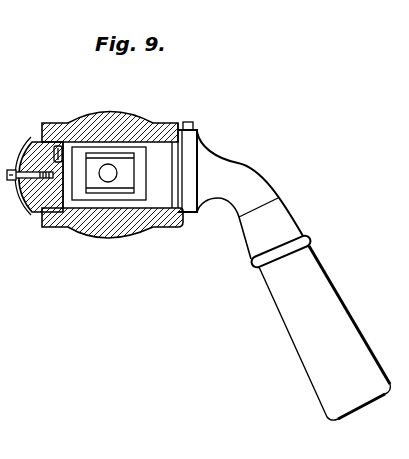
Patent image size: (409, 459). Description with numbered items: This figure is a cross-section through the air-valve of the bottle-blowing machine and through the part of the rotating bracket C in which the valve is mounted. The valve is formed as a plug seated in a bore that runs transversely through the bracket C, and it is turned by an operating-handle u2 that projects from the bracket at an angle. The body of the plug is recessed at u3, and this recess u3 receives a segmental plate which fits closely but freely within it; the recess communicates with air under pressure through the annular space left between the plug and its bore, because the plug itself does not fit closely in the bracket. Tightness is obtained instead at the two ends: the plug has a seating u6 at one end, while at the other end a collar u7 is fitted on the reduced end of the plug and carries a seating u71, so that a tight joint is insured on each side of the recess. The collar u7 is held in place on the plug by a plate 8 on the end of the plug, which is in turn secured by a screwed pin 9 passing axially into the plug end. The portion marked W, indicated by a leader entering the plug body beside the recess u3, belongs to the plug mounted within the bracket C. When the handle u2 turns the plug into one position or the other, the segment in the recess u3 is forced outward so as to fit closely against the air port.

The rotating bracket C is at (130, 221).
The collar u7 is at (32, 139).
The seating u71 is at (32, 216).
The plate 8 is at (21, 170).
The screwed pin 9 is at (13, 182).
The recess u3 is at (103, 192).
The end cap W is at (162, 160).
The seating u6 is at (195, 212).
The operating-handle u2 is at (308, 262).